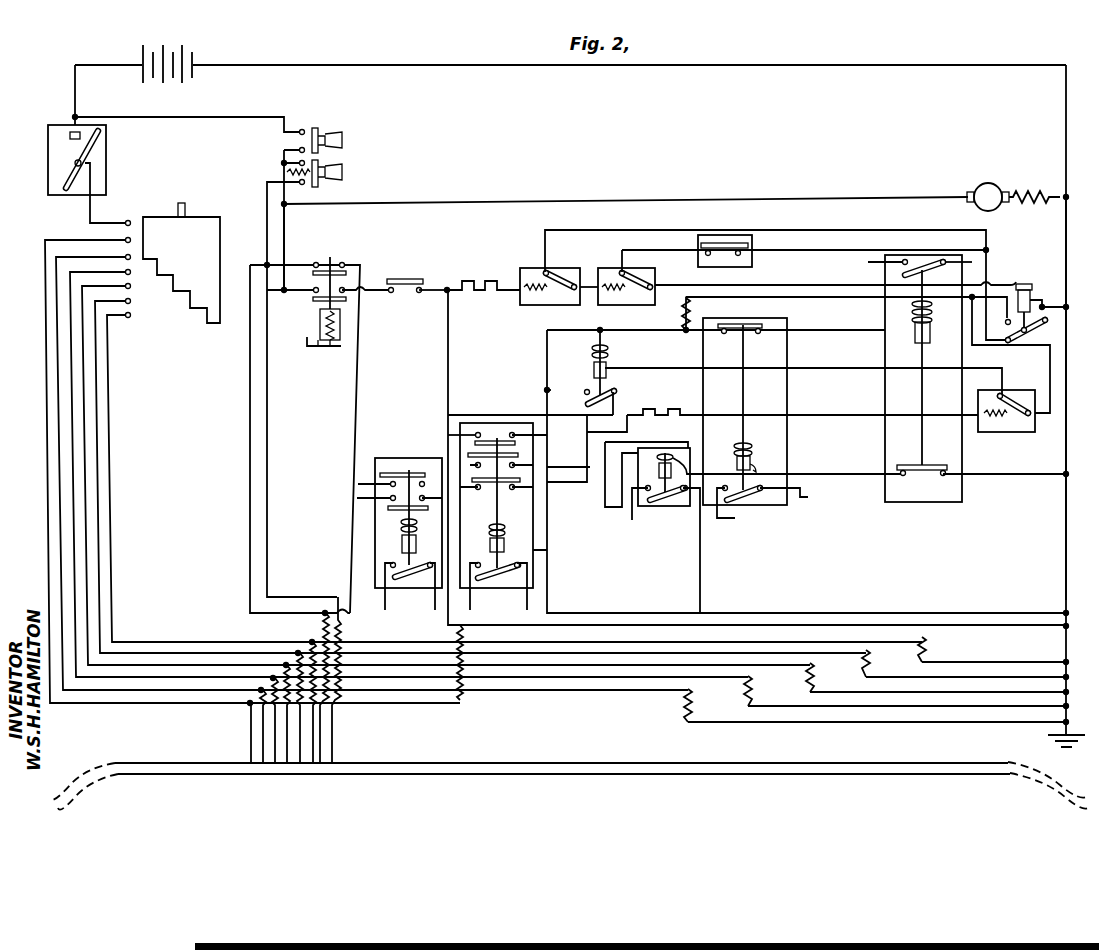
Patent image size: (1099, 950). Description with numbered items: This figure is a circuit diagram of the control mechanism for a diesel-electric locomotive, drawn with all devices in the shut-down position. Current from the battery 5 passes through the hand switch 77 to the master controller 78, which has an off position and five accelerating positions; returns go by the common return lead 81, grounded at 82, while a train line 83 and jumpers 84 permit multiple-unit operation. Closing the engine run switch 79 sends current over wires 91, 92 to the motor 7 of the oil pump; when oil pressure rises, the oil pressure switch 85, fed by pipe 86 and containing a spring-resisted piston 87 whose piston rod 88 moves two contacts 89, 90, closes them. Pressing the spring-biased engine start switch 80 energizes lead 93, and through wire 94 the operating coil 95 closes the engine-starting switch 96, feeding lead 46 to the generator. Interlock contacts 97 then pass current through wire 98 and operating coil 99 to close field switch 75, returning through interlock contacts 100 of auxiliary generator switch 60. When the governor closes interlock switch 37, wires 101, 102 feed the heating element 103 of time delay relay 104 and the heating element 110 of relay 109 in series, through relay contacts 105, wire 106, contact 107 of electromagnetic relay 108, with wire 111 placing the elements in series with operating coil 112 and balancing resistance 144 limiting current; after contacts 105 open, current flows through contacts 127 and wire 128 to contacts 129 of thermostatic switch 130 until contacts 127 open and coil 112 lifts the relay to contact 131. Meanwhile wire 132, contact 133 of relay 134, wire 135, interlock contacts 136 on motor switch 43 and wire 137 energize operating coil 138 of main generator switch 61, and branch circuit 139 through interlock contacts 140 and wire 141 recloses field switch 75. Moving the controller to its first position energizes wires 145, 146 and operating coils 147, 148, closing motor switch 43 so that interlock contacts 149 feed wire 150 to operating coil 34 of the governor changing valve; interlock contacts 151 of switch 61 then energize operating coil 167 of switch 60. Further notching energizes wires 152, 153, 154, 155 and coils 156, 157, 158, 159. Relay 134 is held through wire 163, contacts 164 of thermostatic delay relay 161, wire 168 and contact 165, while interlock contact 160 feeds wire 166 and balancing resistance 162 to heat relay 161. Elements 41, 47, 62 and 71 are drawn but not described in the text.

The battery 5 is at (170, 96).
The motor 7 is at (992, 182).
The operating coil 34 is at (680, 310).
The interlock switch 37 is at (418, 280).
The contact lever 41 is at (527, 604).
The motor switch 43 is at (533, 528).
The lead 46 is at (435, 606).
The conductor 47 is at (700, 530).
The auxiliary generator switch 60 is at (885, 393).
The main generator switch 61 is at (787, 393).
The contact 62 is at (722, 518).
The conductor 71 is at (800, 500).
The field switch 75 is at (672, 510).
The hand switch 77 is at (48, 158).
The master controller 78 is at (198, 203).
The engine run switch 79 is at (325, 130).
The engine start switch 80 is at (335, 188).
The common return lead 81 is at (1066, 227).
The ground 82 is at (1052, 735).
The train line 83 is at (578, 763).
The jumpers 84 is at (75, 775).
The oil pressure operated switch 85 is at (330, 348).
The pipe 86 is at (308, 350).
The piston 87 is at (307, 341).
The piston rod 88 is at (320, 312).
The contacts 89 is at (347, 263).
The contacts 90 is at (346, 292).
The wire 91 is at (290, 235).
The wire 92 is at (700, 201).
The lead 93 is at (267, 230).
The wire 94 is at (362, 376).
The operating coil 95 is at (402, 528).
The engine-starting switch 96 is at (385, 562).
The interlock contacts 97 is at (388, 492).
The wire 98 is at (604, 512).
The operating coil 99 is at (678, 446).
The interlock contacts 100 is at (928, 476).
The wire 101 is at (448, 340).
The wire 102 is at (452, 292).
The heating element 103 is at (536, 292).
The thermostatic time delay relay 104 is at (530, 268).
The relay contacts 105 is at (600, 270).
The wire 106 is at (652, 228).
The contact 107 is at (1022, 335).
The electromagnetic relay 108 is at (1027, 276).
The thermostatic time delay relay 109 is at (652, 272).
The heating element 110 is at (612, 292).
The wire 111 is at (770, 285).
The operating coil 112 is at (1032, 292).
The relay contacts 127 is at (610, 270).
The wire 128 is at (672, 254).
The contacts 129 is at (748, 242).
The thermostatic switch 130 is at (707, 260).
The contact 131 is at (1000, 310).
The wire 132 is at (462, 415).
The contact 133 is at (584, 393).
The electromagnetic relay 134 is at (619, 396).
The wire 135 is at (587, 473).
The interlock contacts 136 is at (486, 490).
The wire 137 is at (586, 538).
The operating coil 138 is at (752, 448).
The branch circuit 139 is at (400, 470).
The interlock contacts 140 is at (375, 472).
The wire 141 is at (432, 480).
The balancing resistance 144 is at (470, 276).
The wire 145 is at (47, 343).
The wire 146 is at (59, 388).
The operating coil 147 is at (492, 530).
The operating coil 148 is at (682, 700).
The interlock contacts 149 is at (500, 435).
The wire 150 is at (547, 358).
The interlock contacts 151 is at (745, 328).
The wire 152 is at (72, 364).
The wire 153 is at (85, 391).
The wire 154 is at (97, 436).
The wire 155 is at (108, 490).
The operating coil 156 is at (744, 688).
The operating coil 157 is at (804, 673).
The operating coil 158 is at (860, 660).
The operating coil 159 is at (917, 645).
The interlock contact 160 is at (437, 462).
The thermostatic delay relay 161 is at (1015, 432).
The balancing resistance 162 is at (680, 412).
The wire 163 is at (636, 368).
The contacts 164 is at (1005, 396).
The contact 165 is at (594, 372).
The wire 166 is at (567, 460).
The operating coil 167 is at (912, 310).
The wire 168 is at (962, 330).